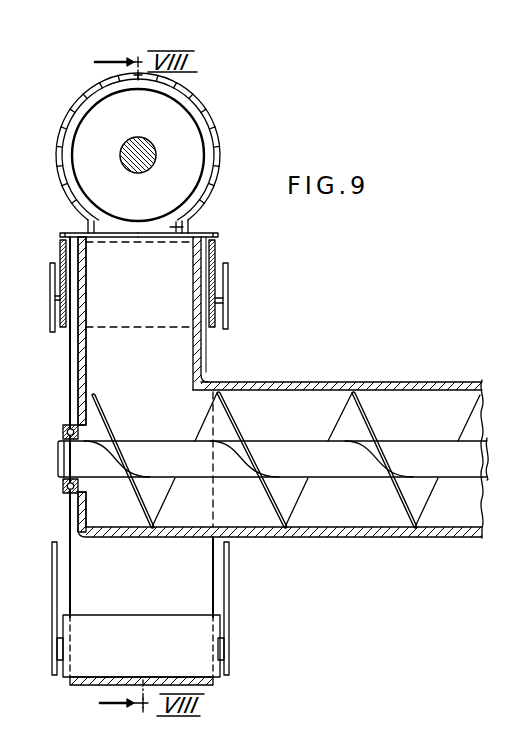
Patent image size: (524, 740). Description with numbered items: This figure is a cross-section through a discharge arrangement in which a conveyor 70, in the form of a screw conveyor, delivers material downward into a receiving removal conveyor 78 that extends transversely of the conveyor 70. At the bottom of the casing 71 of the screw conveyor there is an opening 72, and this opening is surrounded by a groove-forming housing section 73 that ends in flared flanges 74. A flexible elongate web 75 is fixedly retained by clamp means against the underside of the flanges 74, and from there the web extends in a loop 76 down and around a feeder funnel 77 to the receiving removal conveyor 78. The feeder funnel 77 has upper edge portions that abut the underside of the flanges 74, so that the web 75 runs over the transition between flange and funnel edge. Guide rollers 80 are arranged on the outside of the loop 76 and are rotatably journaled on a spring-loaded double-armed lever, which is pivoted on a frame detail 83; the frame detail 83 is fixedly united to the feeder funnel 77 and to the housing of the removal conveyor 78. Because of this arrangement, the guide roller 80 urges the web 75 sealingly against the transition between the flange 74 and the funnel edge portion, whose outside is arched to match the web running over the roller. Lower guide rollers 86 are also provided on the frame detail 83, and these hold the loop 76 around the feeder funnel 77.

The conveyor 70 is at (182, 134).
The casing 71 is at (86, 104).
The opening 72 is at (192, 229).
The groove-forming housing section 73 is at (90, 226).
The flared flanges 74 is at (216, 234).
The flexible elongate web 75 is at (88, 570).
The loop 76 is at (62, 520).
The feeder funnel 77 is at (178, 357).
The receiving removal conveyor 78 is at (358, 503).
The guide rollers 80 is at (216, 312).
The frame detail 83 is at (229, 294).
The lower guide rollers 86 is at (135, 630).